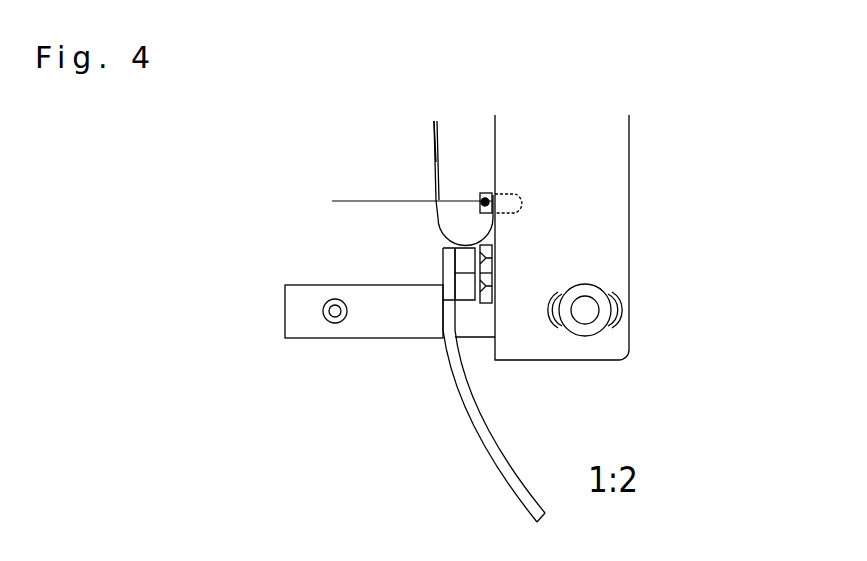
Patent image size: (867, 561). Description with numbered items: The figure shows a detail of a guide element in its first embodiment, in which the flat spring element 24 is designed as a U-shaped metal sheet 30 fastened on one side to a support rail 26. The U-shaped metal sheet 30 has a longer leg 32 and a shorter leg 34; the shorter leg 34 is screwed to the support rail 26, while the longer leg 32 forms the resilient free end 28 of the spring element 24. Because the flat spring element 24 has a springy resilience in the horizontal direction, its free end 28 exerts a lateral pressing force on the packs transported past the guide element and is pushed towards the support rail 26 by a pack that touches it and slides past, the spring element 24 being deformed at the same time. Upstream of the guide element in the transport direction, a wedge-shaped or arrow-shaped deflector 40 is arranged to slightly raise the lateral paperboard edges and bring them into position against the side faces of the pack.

The flat spring element 24 is at (465, 124).
The support rail 26 is at (595, 200).
The free end 28 is at (420, 124).
The U-shaped metal sheet 30 is at (425, 215).
The longer leg 32 is at (435, 160).
The shorter leg 34 is at (495, 227).
The deflector 40 is at (475, 437).